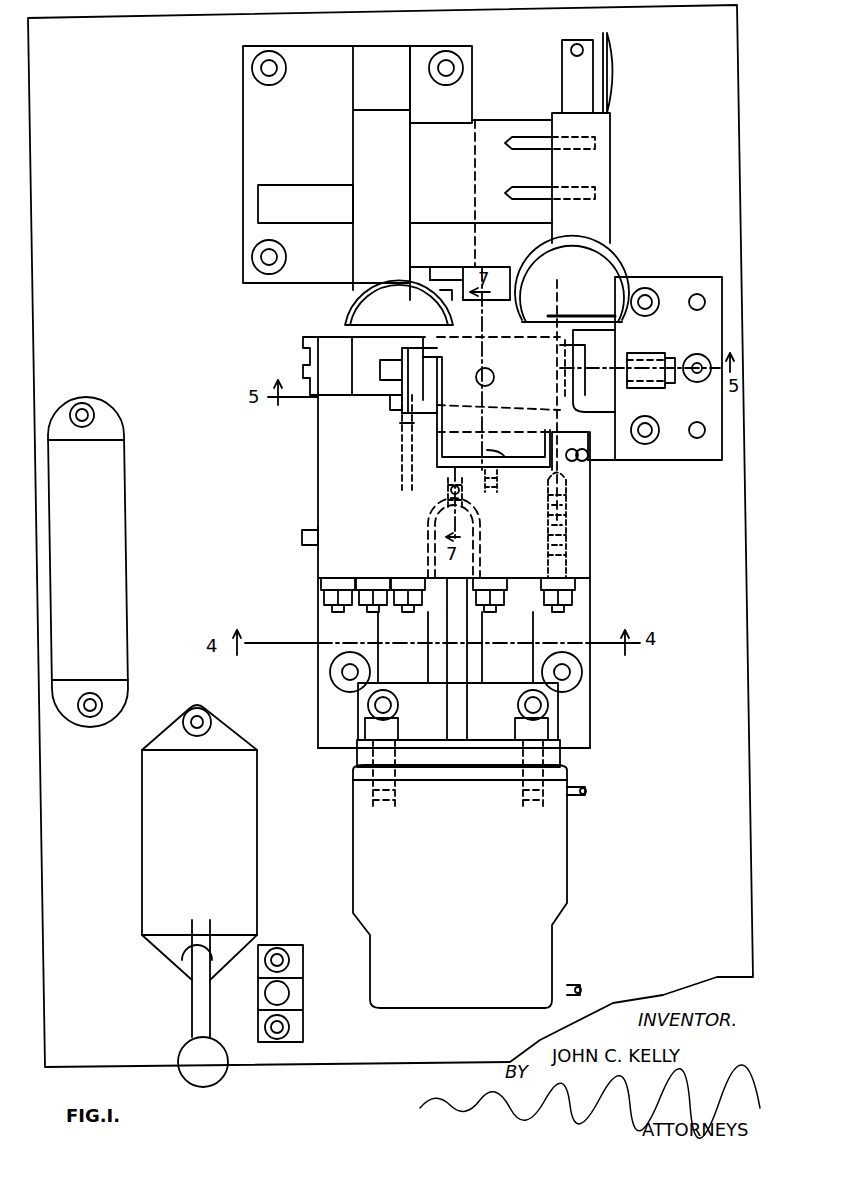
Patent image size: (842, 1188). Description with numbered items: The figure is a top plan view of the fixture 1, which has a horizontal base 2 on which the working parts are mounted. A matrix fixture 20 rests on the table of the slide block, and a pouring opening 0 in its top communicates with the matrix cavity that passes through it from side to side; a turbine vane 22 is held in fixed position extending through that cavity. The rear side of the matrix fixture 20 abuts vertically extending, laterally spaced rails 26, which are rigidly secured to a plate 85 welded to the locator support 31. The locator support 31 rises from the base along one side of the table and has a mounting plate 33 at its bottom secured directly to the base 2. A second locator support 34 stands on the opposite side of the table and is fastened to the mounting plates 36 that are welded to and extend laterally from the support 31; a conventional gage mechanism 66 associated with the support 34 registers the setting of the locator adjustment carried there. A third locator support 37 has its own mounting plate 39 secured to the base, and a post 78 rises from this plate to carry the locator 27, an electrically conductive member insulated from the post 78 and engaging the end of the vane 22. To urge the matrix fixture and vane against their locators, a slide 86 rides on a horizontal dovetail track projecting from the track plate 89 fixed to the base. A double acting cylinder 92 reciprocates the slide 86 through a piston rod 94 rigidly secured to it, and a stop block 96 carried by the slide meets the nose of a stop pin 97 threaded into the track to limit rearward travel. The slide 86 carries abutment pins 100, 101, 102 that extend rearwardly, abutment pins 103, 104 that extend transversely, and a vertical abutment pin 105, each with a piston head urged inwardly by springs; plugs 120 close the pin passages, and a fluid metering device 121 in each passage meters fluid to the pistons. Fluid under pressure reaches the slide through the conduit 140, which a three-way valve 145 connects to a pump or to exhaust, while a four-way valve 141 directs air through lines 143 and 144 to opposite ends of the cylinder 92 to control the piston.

The fixture 1 is at (53, 914).
The horizontal base 2 is at (55, 782).
The pouring opening 0 is at (492, 372).
The matrix fixture 20 is at (453, 286).
The turbine vane 22 is at (614, 452).
The rails 26 is at (455, 270).
The locator 27 is at (582, 364).
The locator support 31 is at (368, 153).
The mounting plate 33 is at (262, 103).
The second locator support 34 is at (605, 175).
The mounting plates 36 is at (497, 118).
The third locator support 37 is at (604, 468).
The mounting plate 39 is at (688, 462).
The gage mechanism 66 is at (628, 64).
The post 78 is at (650, 352).
The plate 85 is at (445, 240).
The slide 86 is at (322, 508).
The track plate 89 is at (590, 722).
The double acting cylinder 92 is at (567, 878).
The piston rod 94 is at (458, 720).
The stop block 96 is at (428, 560).
The stop pin 97 is at (474, 502).
The abutment pin 100 is at (571, 511).
The abutment pin 101 is at (497, 460).
The abutment pin 102 is at (405, 420).
The abutment pin 103 is at (395, 370).
The abutment pin 104 is at (416, 345).
The abutment pin 105 is at (390, 405).
The plugs 120 is at (300, 358).
The fluid metering device 121 is at (333, 624).
The conduit 140 is at (312, 532).
The 4-way valve 141 is at (160, 873).
The line 143 is at (587, 790).
The line 144 is at (572, 985).
The 3-way valve 145 is at (120, 553).